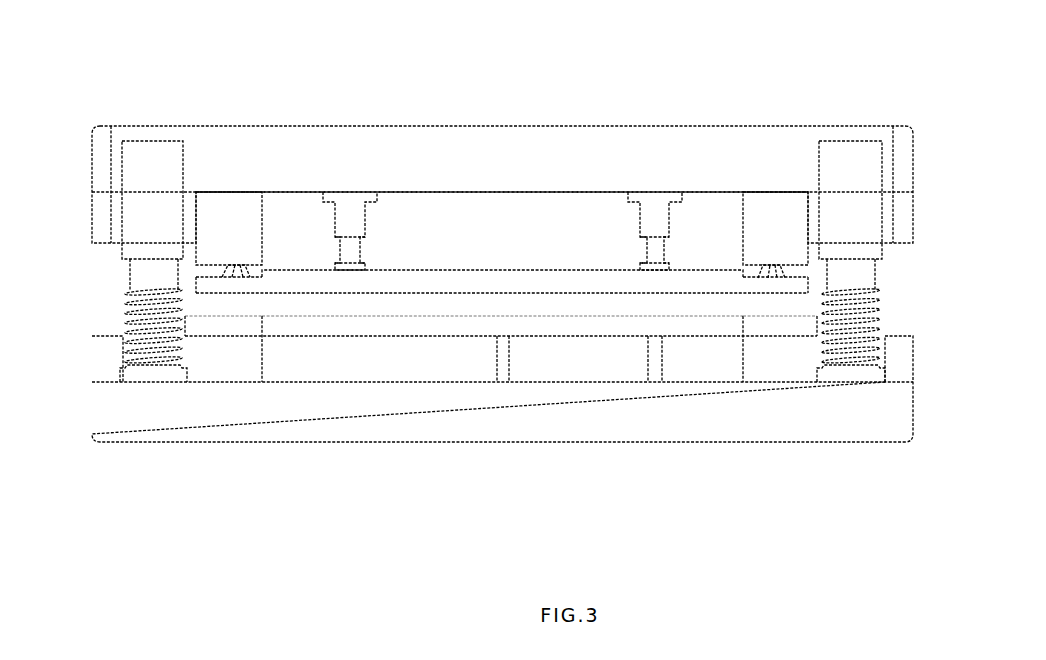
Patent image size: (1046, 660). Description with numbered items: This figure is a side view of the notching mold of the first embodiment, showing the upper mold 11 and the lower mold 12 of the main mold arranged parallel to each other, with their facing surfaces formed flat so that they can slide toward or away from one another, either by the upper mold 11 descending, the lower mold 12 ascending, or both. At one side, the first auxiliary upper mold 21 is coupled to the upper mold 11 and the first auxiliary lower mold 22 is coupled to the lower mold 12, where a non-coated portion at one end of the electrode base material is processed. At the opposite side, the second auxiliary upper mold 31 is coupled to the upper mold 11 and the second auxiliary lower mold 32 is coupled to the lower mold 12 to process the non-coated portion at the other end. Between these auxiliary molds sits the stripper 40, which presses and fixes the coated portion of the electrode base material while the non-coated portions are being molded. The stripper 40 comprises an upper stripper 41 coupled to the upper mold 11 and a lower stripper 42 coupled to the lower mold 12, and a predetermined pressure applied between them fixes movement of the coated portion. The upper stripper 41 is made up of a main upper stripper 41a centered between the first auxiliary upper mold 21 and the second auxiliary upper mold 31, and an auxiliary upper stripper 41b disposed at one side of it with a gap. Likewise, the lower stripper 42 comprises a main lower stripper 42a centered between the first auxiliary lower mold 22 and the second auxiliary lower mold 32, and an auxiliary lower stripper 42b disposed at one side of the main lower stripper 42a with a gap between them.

The upper mold 11 is at (711, 135).
The lower mold 12 is at (513, 413).
The first auxiliary upper mold 21 is at (100, 218).
The first auxiliary lower mold 22 is at (118, 348).
The second auxiliary upper mold 31 is at (907, 218).
The second auxiliary lower mold 32 is at (905, 357).
The stripper 40 is at (501, 282).
The upper stripper 41 is at (502, 161).
The main upper stripper 41a is at (302, 277).
The auxiliary upper stripper 41b is at (252, 285).
The lower stripper 42 is at (501, 425).
The main lower stripper 42a is at (313, 323).
The auxiliary lower stripper 42b is at (228, 323).